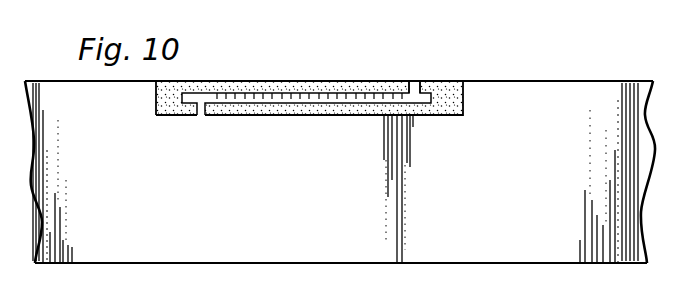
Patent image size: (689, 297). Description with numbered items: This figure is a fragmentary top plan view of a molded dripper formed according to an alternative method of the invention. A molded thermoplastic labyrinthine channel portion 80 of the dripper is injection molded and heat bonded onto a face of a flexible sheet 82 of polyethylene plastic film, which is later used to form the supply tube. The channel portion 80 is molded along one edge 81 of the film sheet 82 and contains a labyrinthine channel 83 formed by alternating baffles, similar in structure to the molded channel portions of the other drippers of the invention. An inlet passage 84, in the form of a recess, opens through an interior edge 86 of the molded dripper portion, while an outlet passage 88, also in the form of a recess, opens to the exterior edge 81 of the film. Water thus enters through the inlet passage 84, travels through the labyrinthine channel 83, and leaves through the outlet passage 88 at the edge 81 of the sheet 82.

The molded thermoplastic labyrinthine channel portion 80 is at (298, 120).
The edge of film sheet 81 is at (238, 80).
The flexible sheet 82 is at (443, 203).
The labyrinthine channel 83 is at (283, 97).
The inlet passage 84 is at (200, 108).
The interior edge 86 is at (372, 117).
The outlet passage 88 is at (418, 80).